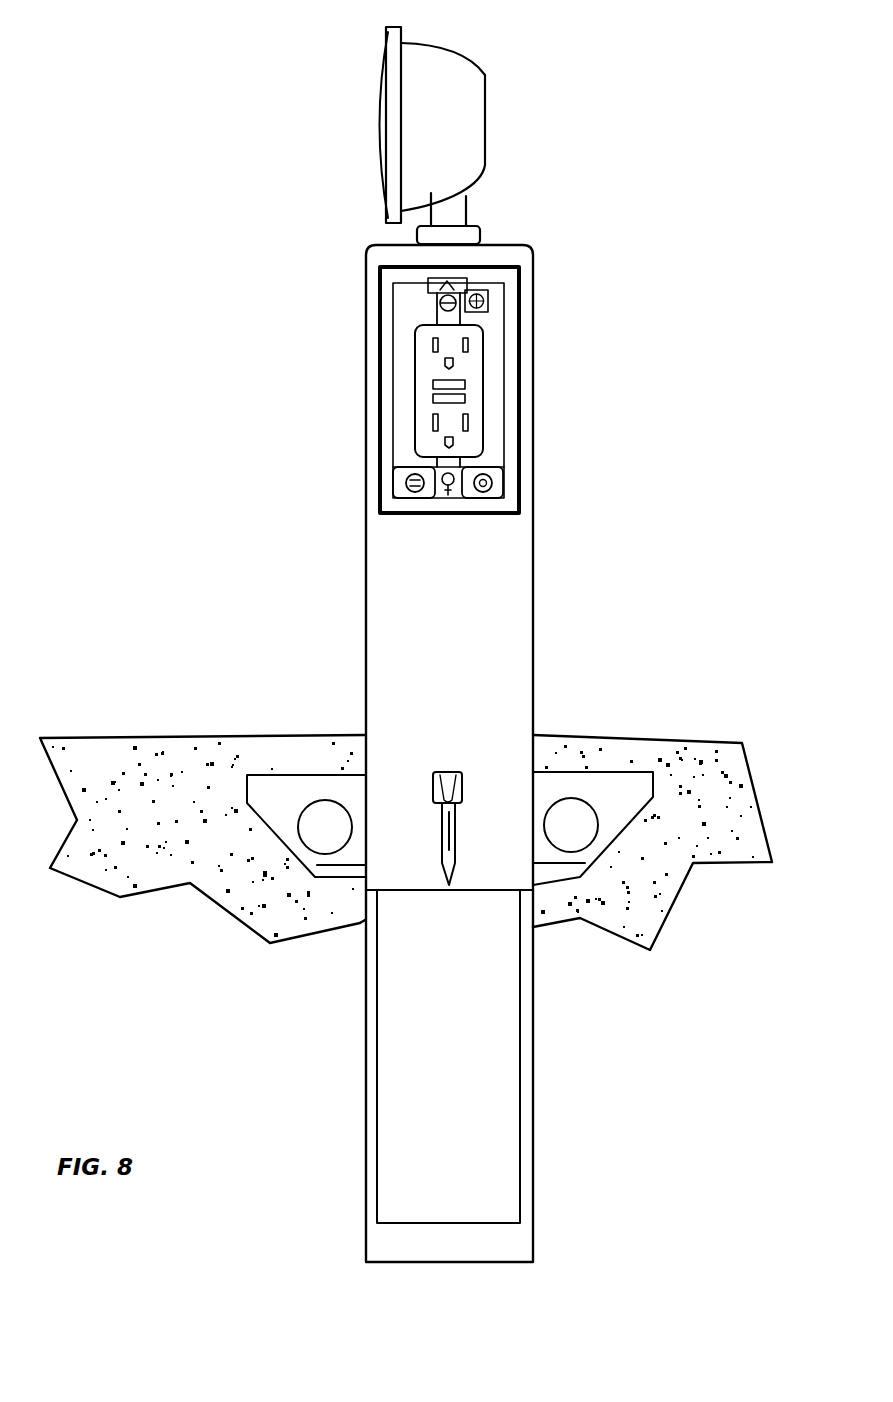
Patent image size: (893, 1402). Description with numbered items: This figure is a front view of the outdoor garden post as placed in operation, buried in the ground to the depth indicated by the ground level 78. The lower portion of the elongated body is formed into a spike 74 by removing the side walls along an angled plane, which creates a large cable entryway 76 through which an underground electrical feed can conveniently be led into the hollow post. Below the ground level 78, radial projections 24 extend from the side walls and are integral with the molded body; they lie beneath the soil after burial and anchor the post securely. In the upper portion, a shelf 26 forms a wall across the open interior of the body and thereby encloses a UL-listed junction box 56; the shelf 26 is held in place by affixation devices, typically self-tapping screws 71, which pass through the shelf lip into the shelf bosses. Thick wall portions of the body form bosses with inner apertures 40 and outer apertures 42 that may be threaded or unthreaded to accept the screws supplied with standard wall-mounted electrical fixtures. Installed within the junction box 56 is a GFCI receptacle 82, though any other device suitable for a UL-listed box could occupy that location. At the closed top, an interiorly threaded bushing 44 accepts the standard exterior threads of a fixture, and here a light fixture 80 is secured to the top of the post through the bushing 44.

The radial projections 24 is at (290, 808).
The shelf 26 is at (397, 478).
The inner apertures 40 is at (435, 308).
The outer apertures 42 is at (433, 290).
The bushing 44 is at (470, 237).
The junction box 56 is at (493, 447).
The self-tapping screws 71 is at (397, 487).
The spike 74 is at (522, 1082).
The cable entryway 76 is at (447, 983).
The ground level 78 is at (230, 733).
The light fixture 80 is at (473, 110).
The GFCI receptacle 82 is at (475, 393).